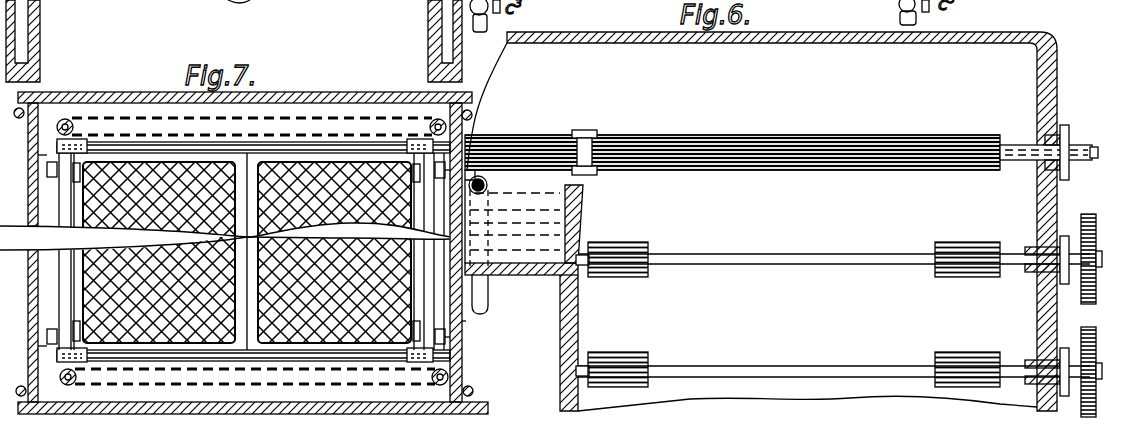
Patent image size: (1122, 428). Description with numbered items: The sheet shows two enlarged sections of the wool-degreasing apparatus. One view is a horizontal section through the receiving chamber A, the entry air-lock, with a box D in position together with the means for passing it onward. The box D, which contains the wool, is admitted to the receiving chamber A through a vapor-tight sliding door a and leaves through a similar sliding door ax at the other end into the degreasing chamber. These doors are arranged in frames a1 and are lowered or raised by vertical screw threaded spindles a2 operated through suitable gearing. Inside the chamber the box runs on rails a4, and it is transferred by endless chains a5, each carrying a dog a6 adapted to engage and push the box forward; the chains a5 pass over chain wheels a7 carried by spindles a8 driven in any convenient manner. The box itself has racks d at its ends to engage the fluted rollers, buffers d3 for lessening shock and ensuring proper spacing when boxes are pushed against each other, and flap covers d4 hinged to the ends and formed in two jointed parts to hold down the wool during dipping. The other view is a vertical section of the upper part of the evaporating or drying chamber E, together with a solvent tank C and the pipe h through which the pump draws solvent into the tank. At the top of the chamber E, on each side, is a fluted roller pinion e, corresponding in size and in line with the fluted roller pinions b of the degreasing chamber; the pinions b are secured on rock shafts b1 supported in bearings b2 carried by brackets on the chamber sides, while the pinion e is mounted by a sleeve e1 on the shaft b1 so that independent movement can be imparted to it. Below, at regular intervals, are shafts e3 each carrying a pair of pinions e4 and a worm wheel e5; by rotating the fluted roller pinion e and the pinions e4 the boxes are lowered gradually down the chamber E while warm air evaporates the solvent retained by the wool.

In FIG. 7, the receiving chamber A is at (253, 238).
In FIG. 7, the sliding door a is at (38, 212).
In FIG. 7, the door frame a1 is at (450, 305).
In FIG. 7, the screw threaded spindle a2 is at (15, 110).
In FIG. 7, the rails a4 is at (30, 155).
In FIG. 7, the endless chain a5 is at (342, 116).
In FIG. 7, the dog a6 is at (53, 143).
In FIG. 7, the chain wheel a7 is at (55, 140).
In FIG. 7, the spindle a8 is at (65, 119).
In FIG. 7, the sliding door ax is at (463, 321).
In FIG. 7, the rack d is at (45, 168).
In FIG. 7, the buffer d3 is at (452, 332).
In FIG. 7, the cover d4 is at (107, 226).
In FIG. 7, the box D is at (247, 252).
In FIG. 6, the drying chamber E is at (762, 221).
In FIG. 6, the fluted roller pinion b is at (732, 140).
In FIG. 6, the rock shaft b1 is at (1070, 142).
In FIG. 6, the bearing b2 is at (585, 130).
In FIG. 6, the fluted roller pinion e is at (780, 135).
In FIG. 6, the sleeve e1 is at (1013, 144).
In FIG. 6, the shaft e3 is at (775, 254).
In FIG. 6, the pinion e4 is at (614, 243).
In FIG. 6, the worm wheel e5 is at (1086, 214).
In FIG. 6, the solvent tank C is at (524, 222).
In FIG. 6, the pipe h is at (484, 294).